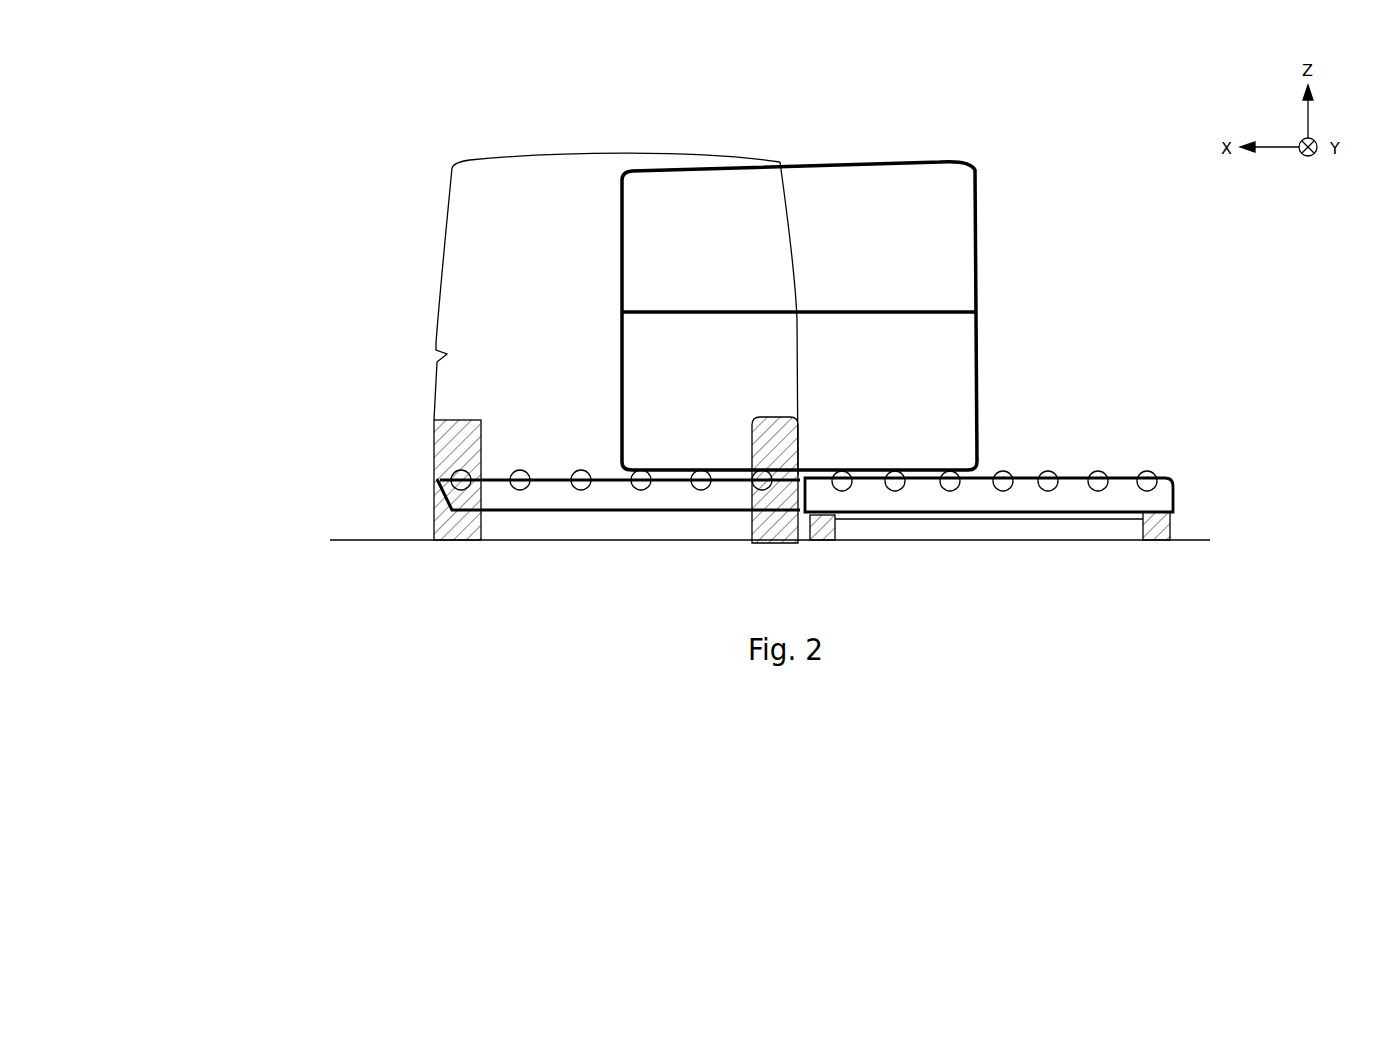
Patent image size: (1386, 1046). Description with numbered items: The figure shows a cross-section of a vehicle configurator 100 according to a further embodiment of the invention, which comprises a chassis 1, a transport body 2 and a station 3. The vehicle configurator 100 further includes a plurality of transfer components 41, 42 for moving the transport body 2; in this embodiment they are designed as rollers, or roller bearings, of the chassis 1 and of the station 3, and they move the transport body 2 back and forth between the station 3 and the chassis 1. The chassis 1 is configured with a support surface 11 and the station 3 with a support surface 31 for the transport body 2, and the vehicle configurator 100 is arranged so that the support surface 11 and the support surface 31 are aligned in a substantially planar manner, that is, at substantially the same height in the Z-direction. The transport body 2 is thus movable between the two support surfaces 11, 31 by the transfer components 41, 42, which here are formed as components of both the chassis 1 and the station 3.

The vehicle configurator 100 is at (686, 317).
The chassis 1 is at (522, 314).
The transport body 2 is at (846, 282).
The support surface 11 is at (504, 527).
The station 3 is at (1071, 580).
The support surface 31 is at (833, 416).
The transfer component 41 is at (599, 608).
The transfer component 42 is at (989, 607).